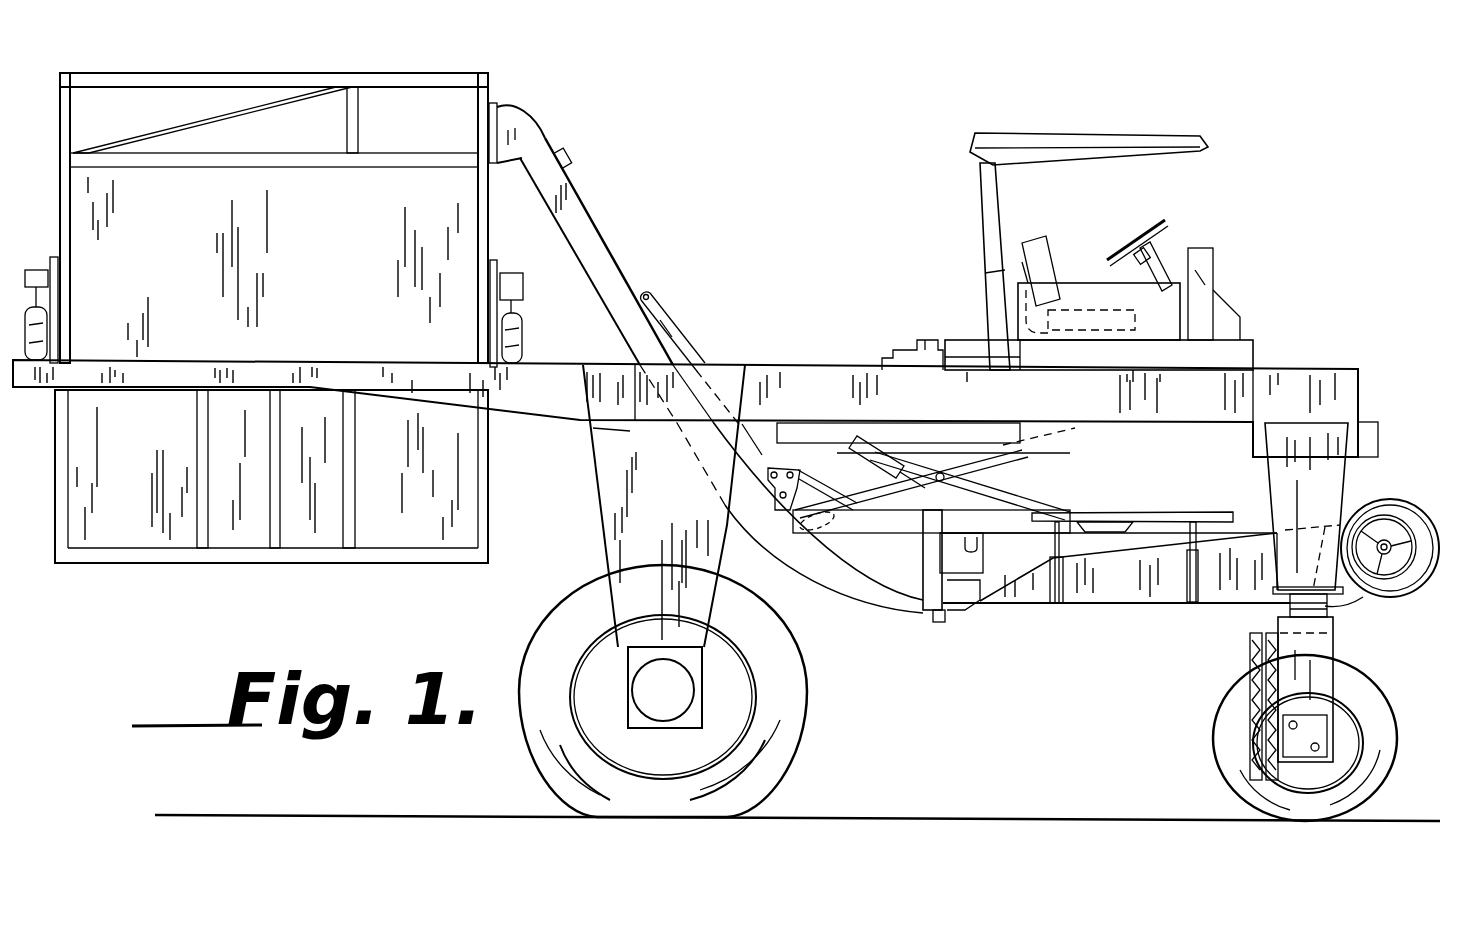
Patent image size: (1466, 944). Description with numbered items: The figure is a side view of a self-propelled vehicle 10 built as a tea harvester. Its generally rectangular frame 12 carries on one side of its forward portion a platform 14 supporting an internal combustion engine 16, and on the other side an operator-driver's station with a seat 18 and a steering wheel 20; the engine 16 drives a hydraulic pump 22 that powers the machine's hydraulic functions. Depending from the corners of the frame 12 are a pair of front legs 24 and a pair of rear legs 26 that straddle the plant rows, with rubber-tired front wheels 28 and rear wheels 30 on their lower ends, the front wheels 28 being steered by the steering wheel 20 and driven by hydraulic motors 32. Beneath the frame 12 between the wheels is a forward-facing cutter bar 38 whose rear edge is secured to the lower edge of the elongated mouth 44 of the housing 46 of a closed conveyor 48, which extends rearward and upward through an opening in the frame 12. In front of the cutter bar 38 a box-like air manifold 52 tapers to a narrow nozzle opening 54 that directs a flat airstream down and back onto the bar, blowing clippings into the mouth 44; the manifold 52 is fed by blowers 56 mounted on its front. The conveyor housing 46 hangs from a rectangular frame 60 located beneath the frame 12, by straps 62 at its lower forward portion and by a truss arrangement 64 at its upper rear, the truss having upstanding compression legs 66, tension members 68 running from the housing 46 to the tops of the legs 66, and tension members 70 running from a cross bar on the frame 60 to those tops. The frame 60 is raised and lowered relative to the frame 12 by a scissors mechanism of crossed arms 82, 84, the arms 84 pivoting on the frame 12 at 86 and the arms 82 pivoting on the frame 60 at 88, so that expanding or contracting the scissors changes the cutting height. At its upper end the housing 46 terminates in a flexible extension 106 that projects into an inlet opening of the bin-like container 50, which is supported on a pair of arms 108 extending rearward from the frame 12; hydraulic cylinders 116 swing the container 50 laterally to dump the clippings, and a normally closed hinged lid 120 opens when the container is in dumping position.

The self-propelled vehicle 10 is at (1372, 240).
The frame 12 is at (785, 364).
The platform 14 is at (1262, 354).
The internal combustion engine 16 is at (1082, 283).
The operator-driver's seat 18 is at (1052, 243).
The steering wheel 20 is at (1158, 235).
The hydraulic pump 22 is at (905, 345).
The front legs 24 is at (1348, 477).
The rear legs 26 is at (598, 494).
The front wheels 28 is at (1370, 677).
The rear wheels 30 is at (808, 703).
The hydraulic motors 32 is at (1313, 735).
The cutter bar 38 is at (970, 612).
The mouth 44 is at (944, 612).
The housing 46 is at (897, 613).
The closed conveyor 48 is at (628, 236).
The container 50 is at (420, 48).
The air manifold 52 is at (1147, 605).
The nozzle opening 54 is at (985, 596).
The blowers 56 is at (1432, 486).
The frame 60 is at (890, 532).
The straps 62 is at (927, 565).
The truss arrangement 64 is at (712, 345).
The compression legs 66 is at (778, 497).
The tension members 68 is at (683, 333).
The tension members 70 is at (884, 462).
The arms 82 is at (1042, 507).
The arms 84 is at (1012, 455).
The pivotal connection 86 is at (808, 424).
The pivotal connection 88 is at (818, 518).
The flexible extension 106 is at (520, 117).
The arms 108 is at (153, 390).
The hydraulic cylinders 116 is at (35, 300).
The hinged lid 120 is at (243, 62).